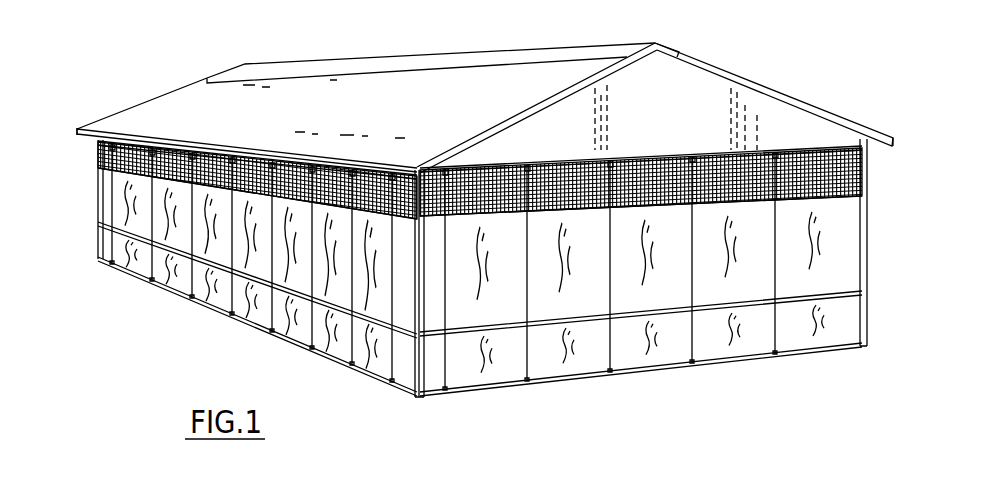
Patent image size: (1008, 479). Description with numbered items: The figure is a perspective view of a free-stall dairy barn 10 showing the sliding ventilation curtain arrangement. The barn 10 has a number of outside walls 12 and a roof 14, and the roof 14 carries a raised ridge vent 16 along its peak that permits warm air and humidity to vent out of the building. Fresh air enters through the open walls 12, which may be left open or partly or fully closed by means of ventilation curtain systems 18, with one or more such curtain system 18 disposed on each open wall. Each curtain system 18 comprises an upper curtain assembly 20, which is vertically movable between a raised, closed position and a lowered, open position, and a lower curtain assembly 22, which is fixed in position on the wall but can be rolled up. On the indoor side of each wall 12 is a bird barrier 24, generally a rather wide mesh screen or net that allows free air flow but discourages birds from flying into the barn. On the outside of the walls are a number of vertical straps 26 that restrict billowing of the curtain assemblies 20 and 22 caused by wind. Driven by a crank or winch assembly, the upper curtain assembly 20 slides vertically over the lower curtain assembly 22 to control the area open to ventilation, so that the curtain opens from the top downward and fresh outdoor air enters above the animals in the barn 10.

The free-stall dairy barn 10 is at (789, 392).
The outside wall 12 is at (96, 142).
The roof 14 is at (813, 108).
The raised ridge vent 16 is at (614, 44).
The ventilation curtain system 18 is at (201, 257).
The upper curtain assembly 20 is at (293, 275).
The lower curtain assembly 22 is at (343, 330).
The bird barrier 24 is at (297, 173).
The vertical strap 26 is at (447, 315).